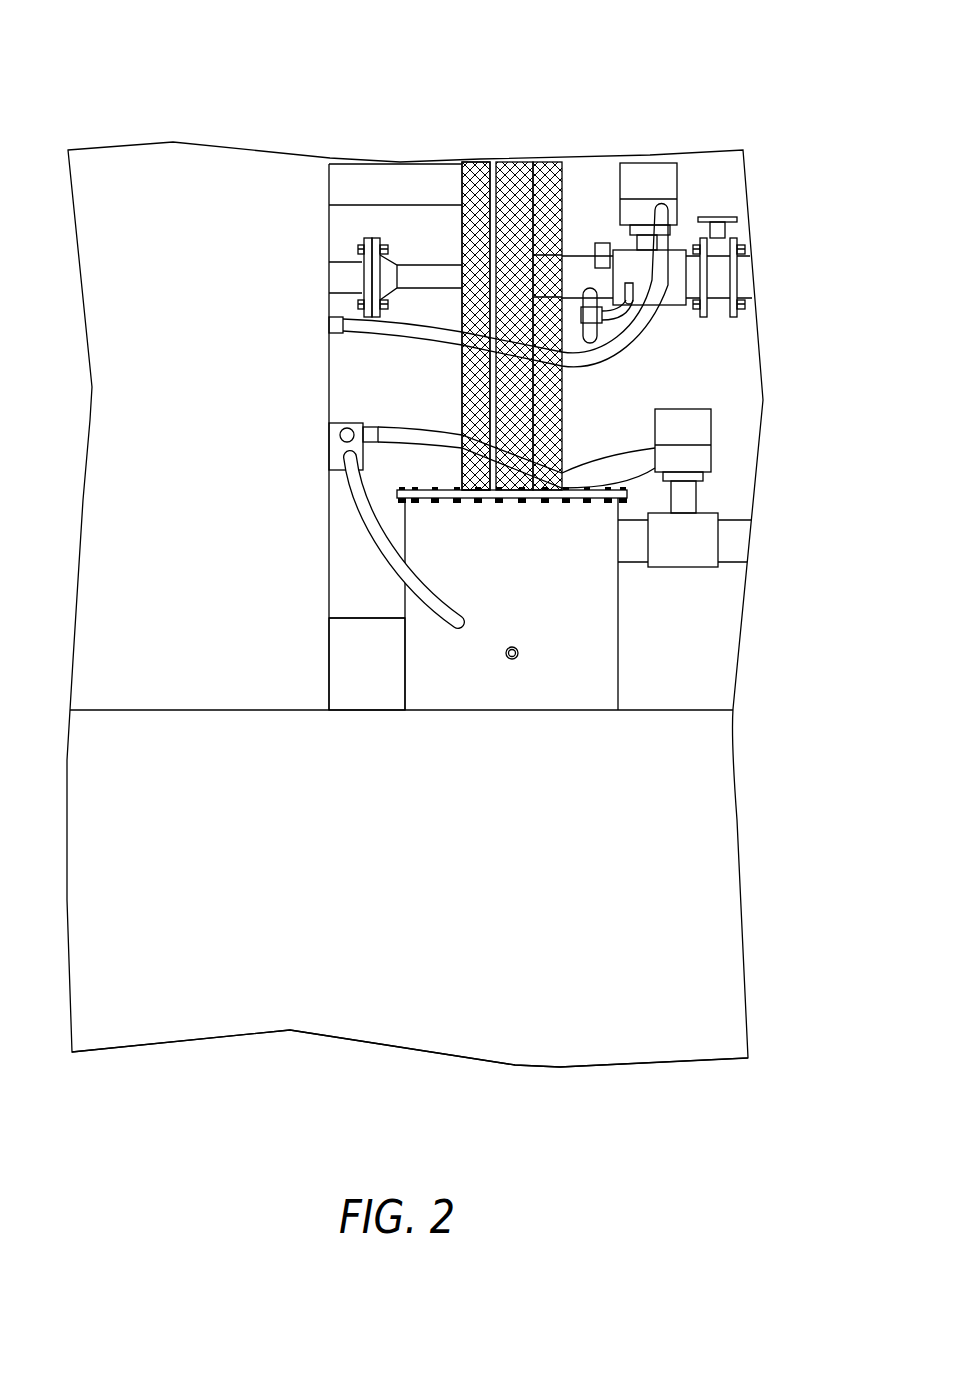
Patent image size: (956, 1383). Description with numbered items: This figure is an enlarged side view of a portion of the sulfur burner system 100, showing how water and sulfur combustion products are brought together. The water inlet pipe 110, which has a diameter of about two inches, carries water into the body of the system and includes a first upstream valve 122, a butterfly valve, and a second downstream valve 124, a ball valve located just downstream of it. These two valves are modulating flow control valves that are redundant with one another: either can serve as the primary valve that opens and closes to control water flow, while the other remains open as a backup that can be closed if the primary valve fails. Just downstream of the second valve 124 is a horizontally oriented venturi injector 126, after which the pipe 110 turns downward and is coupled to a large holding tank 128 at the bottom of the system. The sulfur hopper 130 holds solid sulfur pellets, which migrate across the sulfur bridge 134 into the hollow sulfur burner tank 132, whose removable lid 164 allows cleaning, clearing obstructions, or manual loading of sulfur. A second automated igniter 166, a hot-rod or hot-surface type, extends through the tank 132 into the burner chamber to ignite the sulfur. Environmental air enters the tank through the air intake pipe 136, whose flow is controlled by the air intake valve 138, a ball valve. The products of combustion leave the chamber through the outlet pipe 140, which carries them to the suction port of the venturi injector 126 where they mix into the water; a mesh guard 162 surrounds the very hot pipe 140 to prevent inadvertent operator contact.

The sulfur burner system 100 is at (160, 62).
The water inlet pipe 110 is at (348, 275).
The first upstream valve 122 is at (720, 267).
The second downstream valve 124 is at (670, 268).
The venturi injector 126 is at (424, 273).
The holding tank 128 is at (610, 1030).
The sulfur hopper 130 is at (120, 447).
The sulfur burner tank 132 is at (567, 688).
The sulfur bridge 134 is at (362, 690).
The air intake pipe 136 is at (733, 540).
The air intake valve 138 is at (688, 553).
The outlet pipe 140 is at (513, 195).
The mesh guard 162 is at (477, 183).
The removable lid 164 is at (577, 492).
The second automated igniter 166 is at (377, 535).